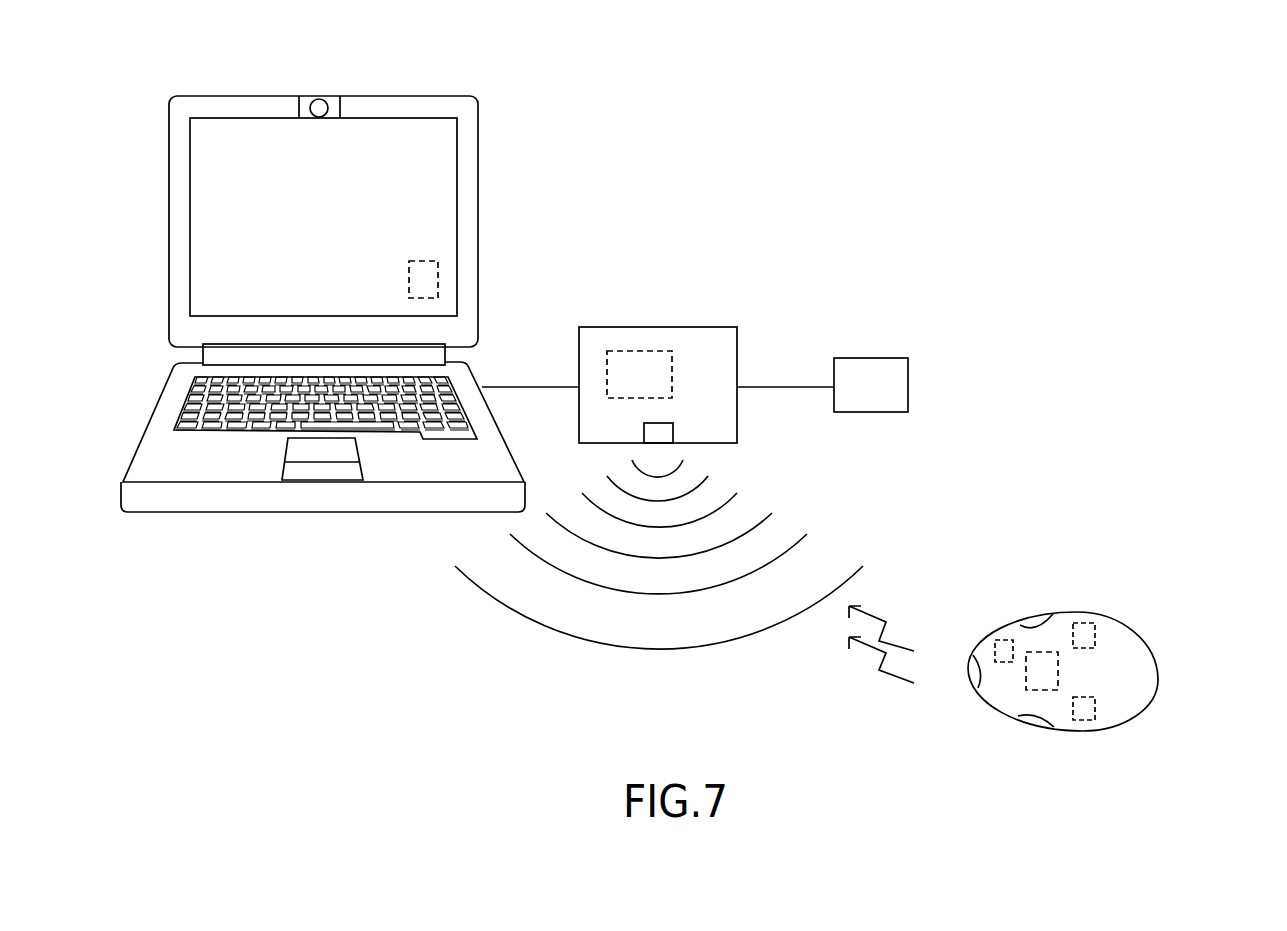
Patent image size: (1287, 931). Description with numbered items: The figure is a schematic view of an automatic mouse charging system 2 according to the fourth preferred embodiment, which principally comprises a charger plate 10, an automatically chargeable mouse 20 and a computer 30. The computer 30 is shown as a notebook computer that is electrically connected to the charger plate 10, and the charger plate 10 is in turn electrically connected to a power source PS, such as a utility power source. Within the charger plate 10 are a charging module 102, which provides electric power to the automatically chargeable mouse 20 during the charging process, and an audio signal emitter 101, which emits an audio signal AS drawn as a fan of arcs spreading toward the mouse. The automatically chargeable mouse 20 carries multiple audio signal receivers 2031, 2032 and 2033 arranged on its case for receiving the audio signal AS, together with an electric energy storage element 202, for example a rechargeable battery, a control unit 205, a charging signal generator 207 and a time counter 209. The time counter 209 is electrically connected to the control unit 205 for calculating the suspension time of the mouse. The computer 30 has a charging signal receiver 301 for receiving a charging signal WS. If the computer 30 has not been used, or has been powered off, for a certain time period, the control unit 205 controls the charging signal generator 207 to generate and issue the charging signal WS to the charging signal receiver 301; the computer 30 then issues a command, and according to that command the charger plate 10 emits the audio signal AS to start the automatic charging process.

The automatic mouse charging system 2 is at (1025, 116).
The computer 30 is at (451, 91).
The charging signal receiver 301 is at (423, 268).
The charger plate 10 is at (697, 322).
The charging module 102 is at (638, 360).
The audio signal emitter 101 is at (661, 432).
The power source PS is at (870, 367).
The audio signal AS is at (500, 603).
The charging signal WS is at (865, 655).
The automatically chargeable mouse 20 is at (1155, 713).
The audio signal receiver 2031 is at (975, 672).
The audio signal receiver 2032 is at (1032, 618).
The audio signal receiver 2033 is at (1028, 720).
The time counter 209 is at (1003, 644).
The electric energy storage element 202 is at (1086, 633).
The control unit 205 is at (1050, 672).
The charging signal generator 207 is at (1095, 712).